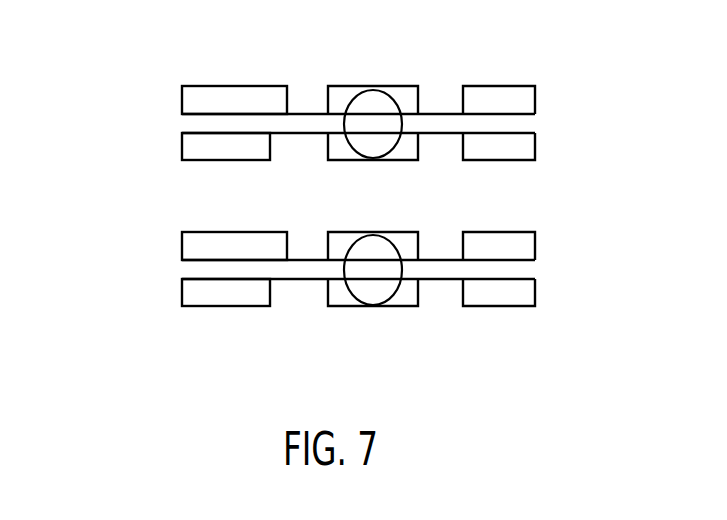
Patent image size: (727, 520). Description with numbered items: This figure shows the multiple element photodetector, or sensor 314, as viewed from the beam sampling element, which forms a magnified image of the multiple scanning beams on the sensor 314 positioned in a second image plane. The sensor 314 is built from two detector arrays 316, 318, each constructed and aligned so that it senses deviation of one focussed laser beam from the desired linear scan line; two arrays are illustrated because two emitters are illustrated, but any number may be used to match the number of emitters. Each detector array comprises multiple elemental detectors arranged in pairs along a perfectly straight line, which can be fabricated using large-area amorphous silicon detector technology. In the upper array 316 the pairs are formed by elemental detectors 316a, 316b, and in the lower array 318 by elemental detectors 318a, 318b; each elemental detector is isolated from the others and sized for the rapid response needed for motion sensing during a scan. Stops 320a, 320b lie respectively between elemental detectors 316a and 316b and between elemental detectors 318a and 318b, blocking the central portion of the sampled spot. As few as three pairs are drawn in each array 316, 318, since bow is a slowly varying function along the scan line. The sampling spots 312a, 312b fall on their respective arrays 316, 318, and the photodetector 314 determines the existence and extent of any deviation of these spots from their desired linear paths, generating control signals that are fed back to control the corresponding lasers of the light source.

The sensor 314 is at (176, 66).
The detector array 316 is at (162, 158).
The detector array 318 is at (168, 226).
The elemental detector 316a is at (535, 88).
The elemental detector 316b is at (535, 162).
The stop 320a is at (535, 125).
The sampling spot 312a is at (377, 92).
The elemental detector 318a is at (534, 243).
The elemental detector 318b is at (534, 300).
The stop 320b is at (534, 272).
The sampling spot 312b is at (372, 298).